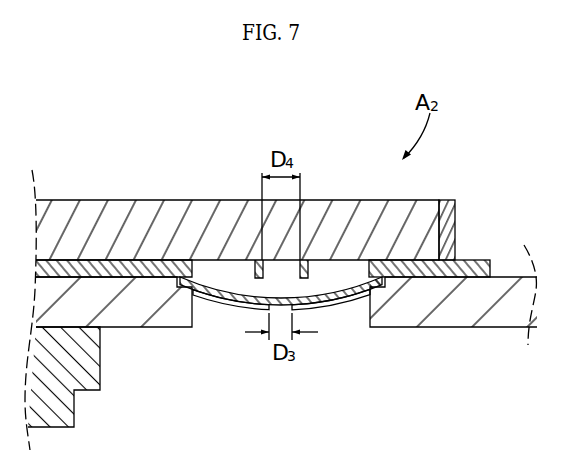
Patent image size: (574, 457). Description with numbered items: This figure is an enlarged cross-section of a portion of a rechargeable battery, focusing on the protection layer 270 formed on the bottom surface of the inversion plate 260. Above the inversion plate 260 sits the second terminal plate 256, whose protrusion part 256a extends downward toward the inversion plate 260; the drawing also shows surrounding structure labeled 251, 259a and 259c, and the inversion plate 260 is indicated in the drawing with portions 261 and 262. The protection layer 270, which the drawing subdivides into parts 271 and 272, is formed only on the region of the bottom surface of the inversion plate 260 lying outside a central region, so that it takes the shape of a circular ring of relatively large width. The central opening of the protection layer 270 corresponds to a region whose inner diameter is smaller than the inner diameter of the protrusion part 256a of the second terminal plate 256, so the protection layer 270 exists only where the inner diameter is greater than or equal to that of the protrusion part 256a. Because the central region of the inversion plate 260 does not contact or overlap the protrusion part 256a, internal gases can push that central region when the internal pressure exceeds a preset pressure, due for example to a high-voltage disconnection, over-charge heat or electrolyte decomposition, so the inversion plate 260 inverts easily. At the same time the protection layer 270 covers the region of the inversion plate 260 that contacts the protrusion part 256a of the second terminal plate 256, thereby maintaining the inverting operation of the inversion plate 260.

The base (lower body) 251 is at (463, 318).
The second terminal plate 256 is at (217, 206).
The protrusion part 256a is at (310, 266).
The flange portion 259a is at (450, 200).
The stepped portion 259c is at (90, 368).
The inversion plate 260 is at (296, 343).
The diaphragm body 261 is at (328, 299).
The diaphragm fixed end 262 is at (375, 284).
The protection layer 270 is at (281, 360).
The first lower layer 271 is at (228, 311).
The second lower layer 272 is at (320, 313).